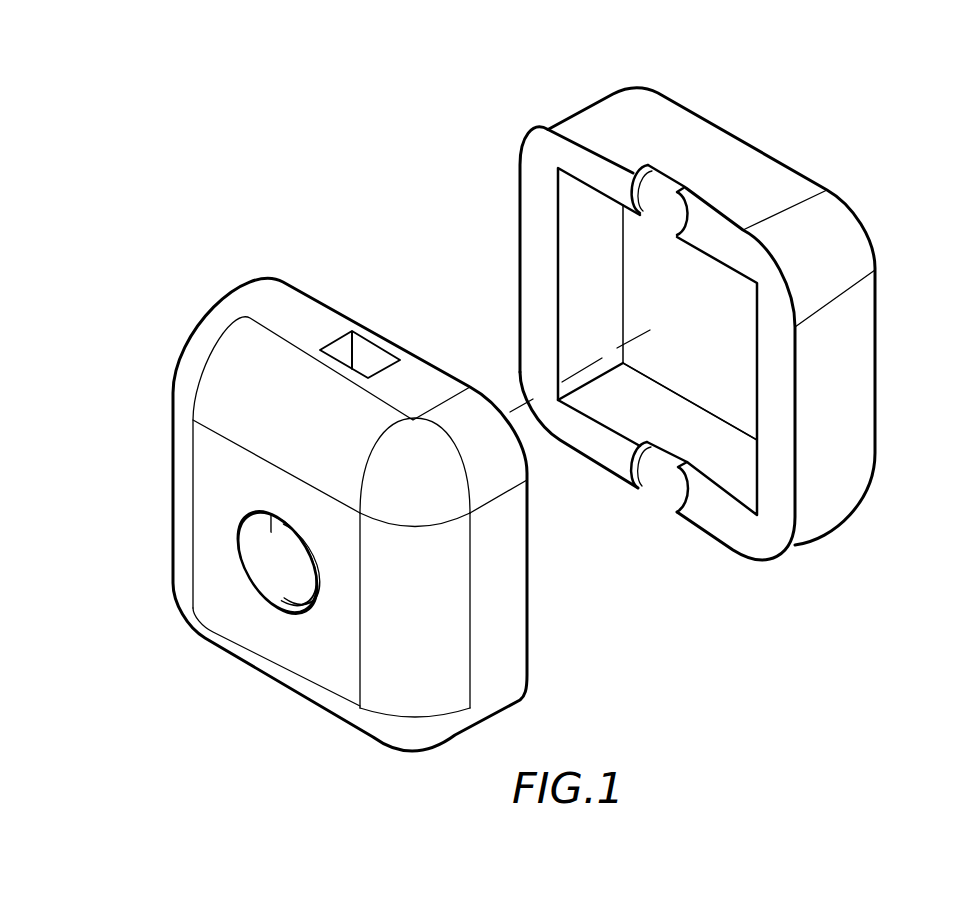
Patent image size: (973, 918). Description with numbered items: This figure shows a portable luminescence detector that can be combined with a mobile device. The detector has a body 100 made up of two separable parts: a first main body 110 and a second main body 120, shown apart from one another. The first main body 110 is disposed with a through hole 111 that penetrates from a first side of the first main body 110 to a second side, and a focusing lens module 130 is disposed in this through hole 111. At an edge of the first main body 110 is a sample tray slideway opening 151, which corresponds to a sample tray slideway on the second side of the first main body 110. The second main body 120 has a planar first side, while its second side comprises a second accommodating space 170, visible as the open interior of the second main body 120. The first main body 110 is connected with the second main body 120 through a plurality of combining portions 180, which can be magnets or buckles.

The body 100 is at (489, 29).
The first main body 110 is at (236, 278).
The through hole 111 is at (268, 590).
The second main body 120 is at (551, 96).
The focusing lens module 130 is at (276, 532).
The sample tray slideway opening 151 is at (367, 349).
The second accommodating space 170 is at (732, 375).
The combining portion 180 is at (665, 190).